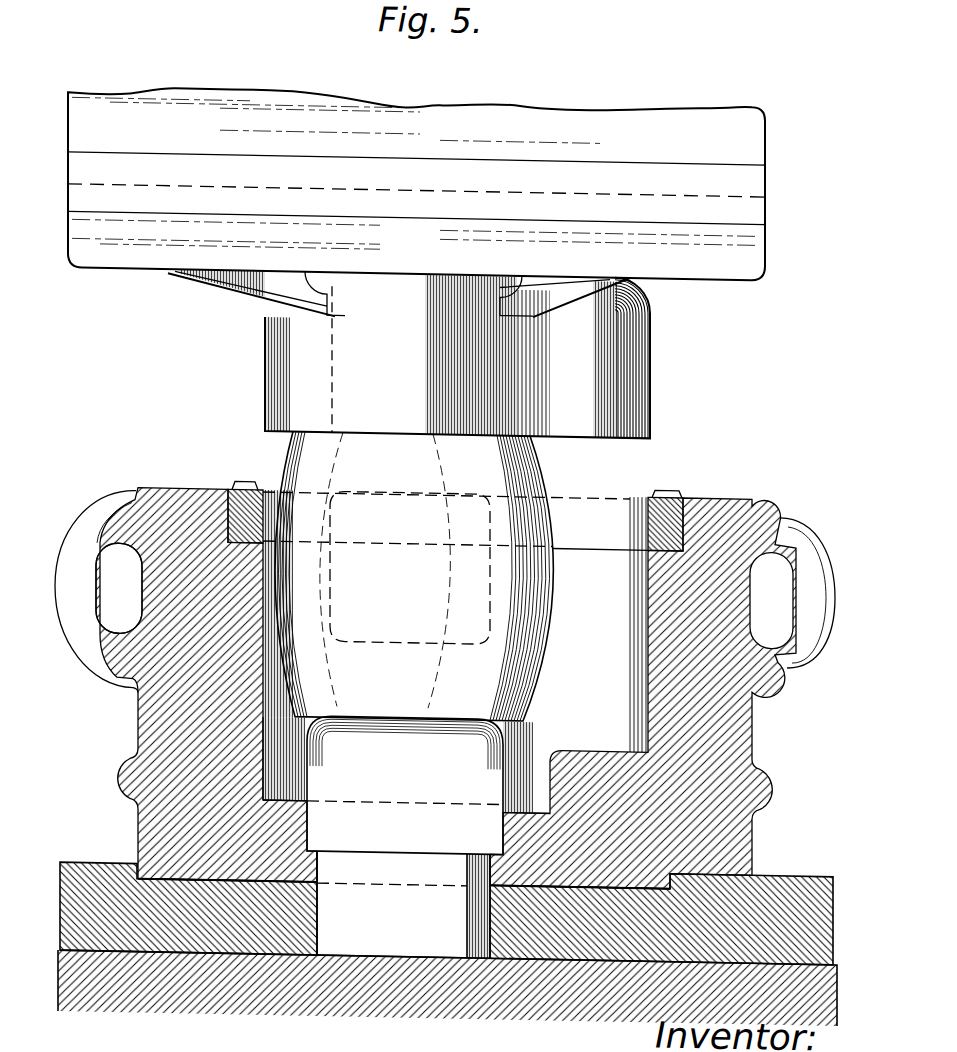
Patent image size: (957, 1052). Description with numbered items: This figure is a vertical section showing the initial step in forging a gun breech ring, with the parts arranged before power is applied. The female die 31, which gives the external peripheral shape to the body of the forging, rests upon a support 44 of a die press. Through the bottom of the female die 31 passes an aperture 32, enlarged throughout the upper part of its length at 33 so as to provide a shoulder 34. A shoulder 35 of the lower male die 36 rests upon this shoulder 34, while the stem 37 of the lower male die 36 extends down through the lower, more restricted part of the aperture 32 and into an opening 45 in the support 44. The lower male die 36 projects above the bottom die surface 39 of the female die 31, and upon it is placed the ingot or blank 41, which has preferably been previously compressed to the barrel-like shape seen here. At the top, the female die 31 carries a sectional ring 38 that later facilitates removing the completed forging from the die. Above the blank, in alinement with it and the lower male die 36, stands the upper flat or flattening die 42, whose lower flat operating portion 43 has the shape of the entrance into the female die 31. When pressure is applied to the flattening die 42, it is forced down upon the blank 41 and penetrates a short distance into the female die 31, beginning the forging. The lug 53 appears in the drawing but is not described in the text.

The female die 31 is at (718, 516).
The aperture 32 is at (490, 848).
The enlarged portion of the aperture 33 is at (505, 850).
The shoulder 34 is at (265, 790).
The shoulder of the lower male die 35 is at (400, 845).
The lower male die 36 is at (398, 785).
The stem 37 is at (430, 937).
The sectional ring 38 is at (662, 492).
The bottom die surface 39 is at (236, 824).
The ingot or blank 41 is at (512, 475).
The upper flat or flattening die 42 is at (612, 193).
The lower flat operating portion 43 is at (625, 333).
The support 44 is at (780, 882).
The opening 45 is at (318, 846).
The lug 53 is at (100, 638).